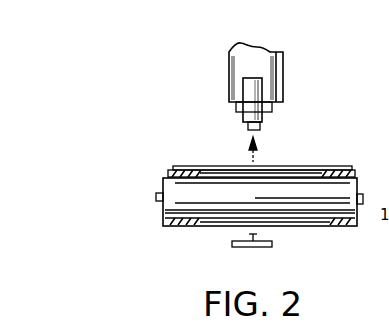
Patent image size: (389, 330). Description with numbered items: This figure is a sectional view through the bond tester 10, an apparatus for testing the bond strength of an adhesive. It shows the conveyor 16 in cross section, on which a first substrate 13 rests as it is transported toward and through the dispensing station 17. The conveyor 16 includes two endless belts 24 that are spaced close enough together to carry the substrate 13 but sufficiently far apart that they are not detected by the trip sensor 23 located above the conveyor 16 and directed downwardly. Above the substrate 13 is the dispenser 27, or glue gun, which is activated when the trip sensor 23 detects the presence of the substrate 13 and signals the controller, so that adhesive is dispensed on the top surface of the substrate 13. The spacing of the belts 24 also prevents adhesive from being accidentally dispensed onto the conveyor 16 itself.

The bond tester 10 is at (90, 222).
The first substrate 13 is at (326, 165).
The conveyor 16 is at (220, 227).
The dispensing station 17 is at (293, 92).
The trip sensor 23 is at (243, 92).
The endless belts 24 is at (186, 167).
The dispenser 27 is at (283, 66).